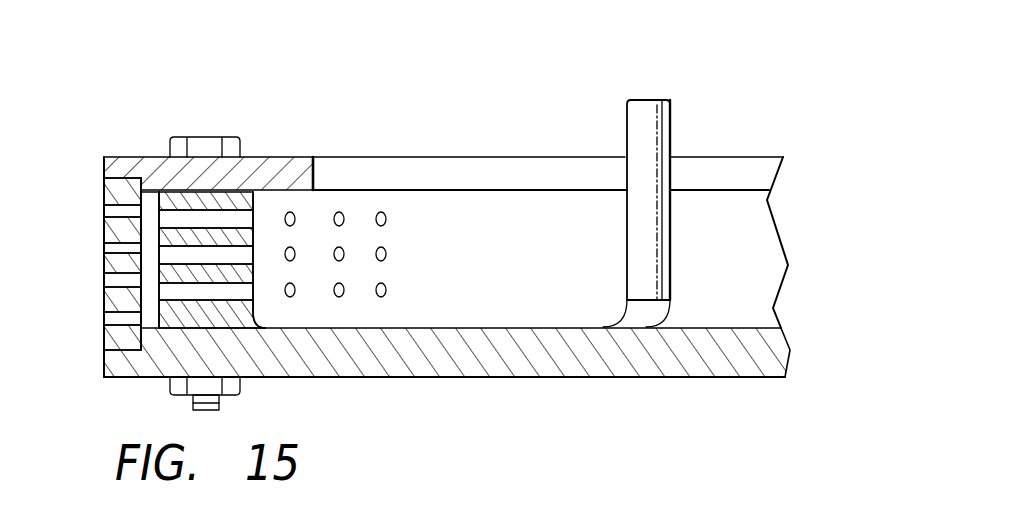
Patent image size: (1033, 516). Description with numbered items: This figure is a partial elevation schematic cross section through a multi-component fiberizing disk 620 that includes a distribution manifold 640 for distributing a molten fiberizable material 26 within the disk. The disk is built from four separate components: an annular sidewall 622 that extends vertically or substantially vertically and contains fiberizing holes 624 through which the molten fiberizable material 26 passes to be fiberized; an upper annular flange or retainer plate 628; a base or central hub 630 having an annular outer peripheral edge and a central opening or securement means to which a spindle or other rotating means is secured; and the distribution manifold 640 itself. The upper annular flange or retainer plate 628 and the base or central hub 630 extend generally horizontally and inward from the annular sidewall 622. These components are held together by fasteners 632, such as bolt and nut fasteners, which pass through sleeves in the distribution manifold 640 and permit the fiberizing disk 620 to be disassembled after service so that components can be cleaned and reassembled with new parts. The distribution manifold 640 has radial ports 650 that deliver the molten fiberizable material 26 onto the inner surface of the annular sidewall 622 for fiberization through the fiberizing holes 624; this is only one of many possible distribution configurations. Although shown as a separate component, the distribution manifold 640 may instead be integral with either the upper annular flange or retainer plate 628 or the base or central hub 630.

The molten fiberizable material 26 is at (652, 127).
The multi-component fiberizing disk 620 is at (490, 117).
The annular sidewall 622 is at (104, 192).
The fiberizing holes 624 is at (104, 243).
The upper annular flange or retainer plate 628 is at (278, 157).
The base or central hub 630 is at (288, 365).
The fasteners 632 is at (222, 137).
The distribution manifold 640 is at (253, 218).
The radial ports 650 is at (387, 218).